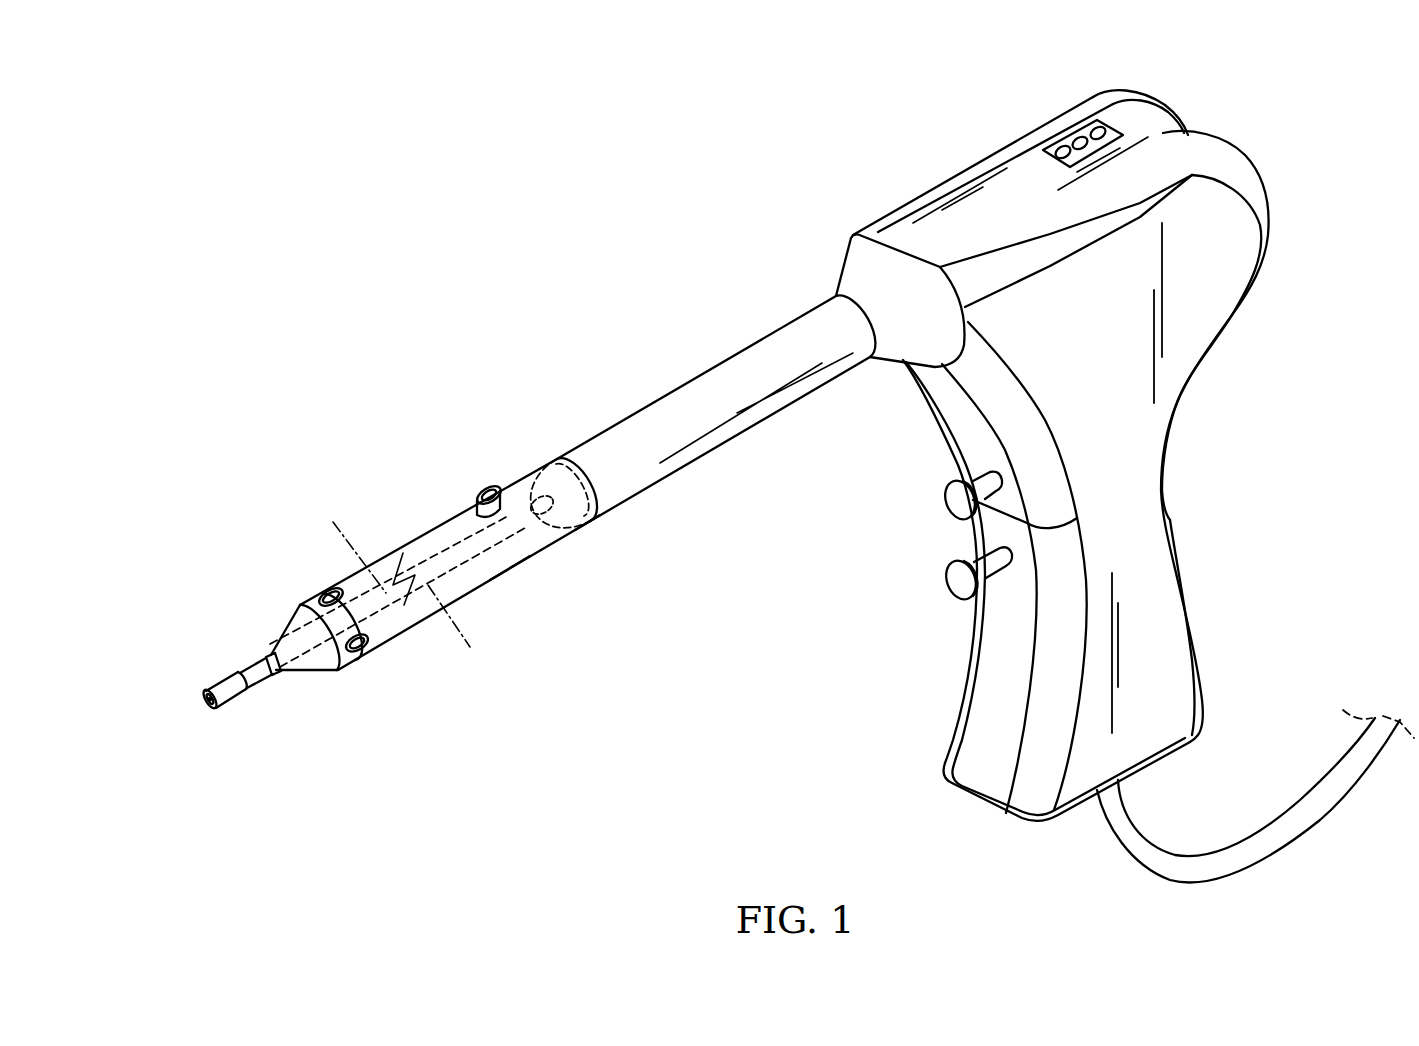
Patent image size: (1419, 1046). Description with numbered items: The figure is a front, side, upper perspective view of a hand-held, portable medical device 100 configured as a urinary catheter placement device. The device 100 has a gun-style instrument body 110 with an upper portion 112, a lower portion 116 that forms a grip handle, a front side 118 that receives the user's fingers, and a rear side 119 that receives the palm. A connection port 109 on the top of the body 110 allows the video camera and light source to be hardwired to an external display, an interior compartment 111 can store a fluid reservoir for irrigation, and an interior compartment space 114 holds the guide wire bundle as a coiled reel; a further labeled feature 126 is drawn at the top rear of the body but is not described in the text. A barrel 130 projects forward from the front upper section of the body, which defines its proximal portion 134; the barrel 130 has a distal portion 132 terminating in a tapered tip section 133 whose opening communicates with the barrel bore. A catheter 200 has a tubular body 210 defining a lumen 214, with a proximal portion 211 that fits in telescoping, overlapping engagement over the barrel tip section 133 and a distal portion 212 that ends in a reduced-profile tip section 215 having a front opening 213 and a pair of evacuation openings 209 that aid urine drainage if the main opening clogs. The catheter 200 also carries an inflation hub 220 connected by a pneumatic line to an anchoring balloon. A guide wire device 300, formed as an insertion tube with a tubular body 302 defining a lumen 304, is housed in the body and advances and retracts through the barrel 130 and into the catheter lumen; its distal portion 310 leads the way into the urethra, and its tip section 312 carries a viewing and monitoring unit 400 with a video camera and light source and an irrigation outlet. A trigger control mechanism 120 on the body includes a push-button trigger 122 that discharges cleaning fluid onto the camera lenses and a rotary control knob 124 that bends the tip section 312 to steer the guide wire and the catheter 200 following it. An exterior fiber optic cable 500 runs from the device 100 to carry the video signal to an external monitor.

The medical device 100 is at (597, 117).
The connection port 109 is at (1086, 130).
The instrument body 110 is at (998, 110).
The interior compartment 111 is at (1242, 300).
The upper portion 112 is at (1291, 131).
The interior compartment space 114 is at (1235, 238).
The lower portion 116 is at (1202, 600).
The front side 118 is at (938, 719).
The rear side 119 is at (1185, 437).
The trigger control mechanism 120 is at (906, 553).
The push-button trigger 122 is at (960, 500).
The control knob 124 is at (960, 583).
The top cap 126 is at (1194, 78).
The barrel 130 is at (686, 328).
The distal portion of barrel 132 is at (604, 512).
The tip section of barrel 133 is at (559, 478).
The proximal portion of barrel 134 is at (822, 285).
The catheter 200 is at (295, 627).
The evacuation openings 209 is at (361, 652).
The catheter body 210 is at (410, 531).
The proximal portion of catheter 211 is at (599, 530).
The distal portion of catheter 212 is at (265, 636).
The front opening 213 is at (252, 649).
The catheter lumen 214 is at (505, 553).
The tip section of catheter 215 is at (313, 693).
The inflation hub 220 is at (487, 488).
The guide wire device 300 is at (362, 620).
The tubular body 302 is at (455, 568).
The lumen 304 is at (475, 547).
The distal portion of guide wire device 310 is at (242, 703).
The tip section 312 is at (212, 677).
The viewing and monitoring unit 400 is at (230, 708).
The fiber optic cable 500 is at (1238, 897).